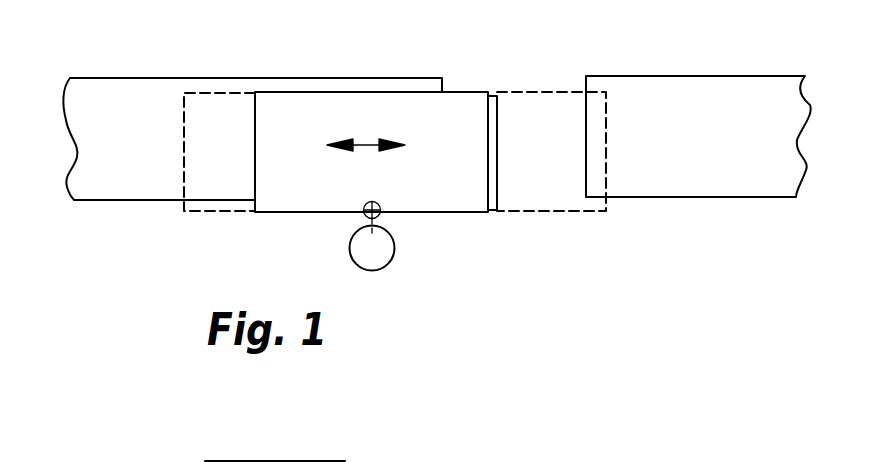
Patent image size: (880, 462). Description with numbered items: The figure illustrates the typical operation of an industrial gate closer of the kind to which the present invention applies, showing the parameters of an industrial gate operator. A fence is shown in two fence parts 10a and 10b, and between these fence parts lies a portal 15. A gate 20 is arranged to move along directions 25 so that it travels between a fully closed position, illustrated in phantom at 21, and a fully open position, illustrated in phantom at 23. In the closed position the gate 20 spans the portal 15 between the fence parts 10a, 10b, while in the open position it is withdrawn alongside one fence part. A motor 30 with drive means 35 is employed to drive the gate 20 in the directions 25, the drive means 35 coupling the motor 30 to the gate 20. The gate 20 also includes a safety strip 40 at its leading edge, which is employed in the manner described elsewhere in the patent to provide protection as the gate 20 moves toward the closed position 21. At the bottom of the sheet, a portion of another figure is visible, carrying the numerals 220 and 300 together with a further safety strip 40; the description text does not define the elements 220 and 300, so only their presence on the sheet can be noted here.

In FIG. 1, the fence part 10a is at (181, 78).
In FIG. 1, the fence part 10b is at (717, 44).
In FIG. 1, the portal 15 is at (523, 34).
In FIG. 1, the gate 20 is at (301, 198).
In FIG. 1, the fully closed position 21 is at (606, 213).
In FIG. 1, the fully open position 23 is at (184, 213).
In FIG. 1, the directions 25 is at (378, 112).
In FIG. 1, the motor 30 is at (395, 250).
In FIG. 1, the drive means 35 is at (379, 204).
In FIG. 1, the safety strip 40 is at (497, 182).
In FIG. 2, the safety strip 40 is at (473, 448).
In FIG. 2, the web section (FIG. 2) 220 is at (222, 437).
In FIG. 2, the assembly (FIG. 2) 300 is at (688, 456).